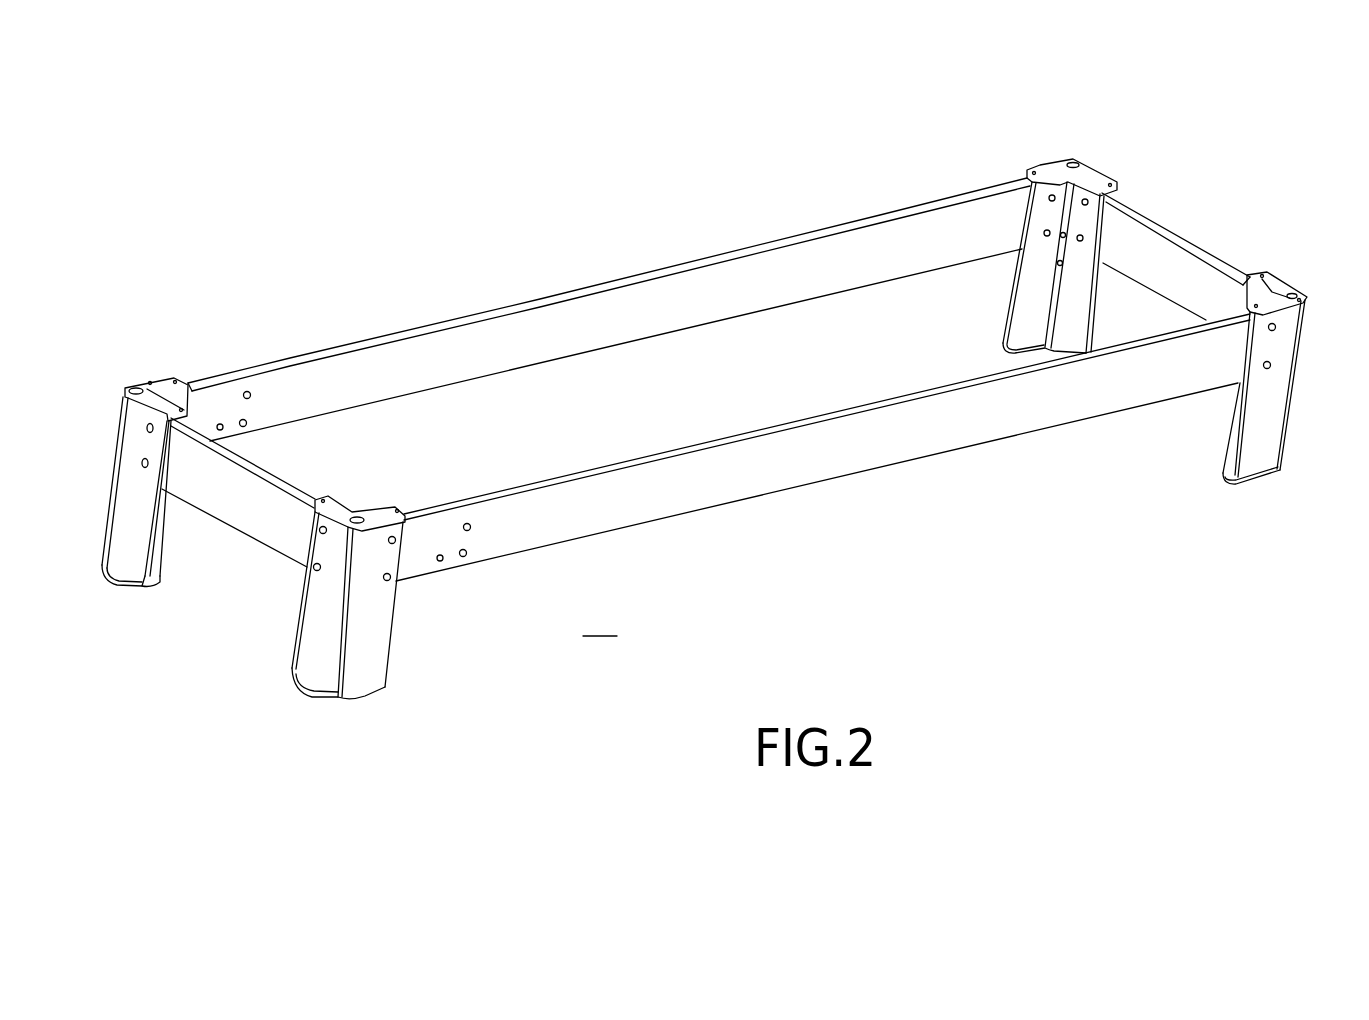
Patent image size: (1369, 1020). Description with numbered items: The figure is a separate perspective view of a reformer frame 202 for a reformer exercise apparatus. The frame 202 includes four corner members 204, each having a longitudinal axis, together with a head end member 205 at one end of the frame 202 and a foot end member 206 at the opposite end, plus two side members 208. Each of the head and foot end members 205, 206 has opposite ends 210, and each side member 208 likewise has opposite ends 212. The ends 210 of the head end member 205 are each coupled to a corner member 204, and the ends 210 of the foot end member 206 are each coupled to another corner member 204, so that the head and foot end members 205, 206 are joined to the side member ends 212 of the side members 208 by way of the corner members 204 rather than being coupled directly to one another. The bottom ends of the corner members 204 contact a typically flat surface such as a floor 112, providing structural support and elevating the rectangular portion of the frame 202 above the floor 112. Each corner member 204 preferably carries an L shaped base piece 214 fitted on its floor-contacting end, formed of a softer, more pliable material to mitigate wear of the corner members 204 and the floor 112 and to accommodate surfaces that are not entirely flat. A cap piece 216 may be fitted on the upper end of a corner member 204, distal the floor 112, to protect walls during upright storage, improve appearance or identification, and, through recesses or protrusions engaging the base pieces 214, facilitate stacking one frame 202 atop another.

The reformer frame 202 is at (218, 174).
The corner member 204 is at (370, 637).
The head end member 205 is at (1143, 250).
The foot end member 206 is at (253, 505).
The side member 208 is at (500, 330).
The end of head or foot end member 210 is at (184, 458).
The side member end 212 is at (1020, 199).
The base piece 214 is at (1258, 483).
The cap piece 216 is at (166, 381).
The floor 112 is at (600, 623).